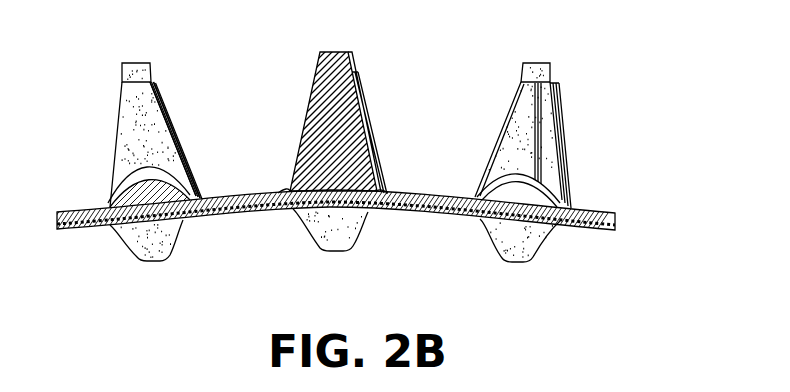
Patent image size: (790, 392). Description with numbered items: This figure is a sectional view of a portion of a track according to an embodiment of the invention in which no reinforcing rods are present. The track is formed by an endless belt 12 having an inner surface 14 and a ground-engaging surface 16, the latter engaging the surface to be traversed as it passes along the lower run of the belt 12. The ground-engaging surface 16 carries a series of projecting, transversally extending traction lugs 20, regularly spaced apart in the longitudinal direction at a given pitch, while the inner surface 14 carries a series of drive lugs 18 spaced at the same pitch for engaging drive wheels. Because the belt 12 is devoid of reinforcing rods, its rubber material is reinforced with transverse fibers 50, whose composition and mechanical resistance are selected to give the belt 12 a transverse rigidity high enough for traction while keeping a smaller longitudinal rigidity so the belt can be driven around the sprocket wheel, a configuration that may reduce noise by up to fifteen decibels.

The belt 12 is at (633, 117).
The inner surface 14 is at (575, 237).
The ground-engaging surface 16 is at (563, 66).
The drive lugs 18 is at (300, 240).
The traction lugs 20 is at (318, 68).
The transverse fibers 50 is at (462, 210).